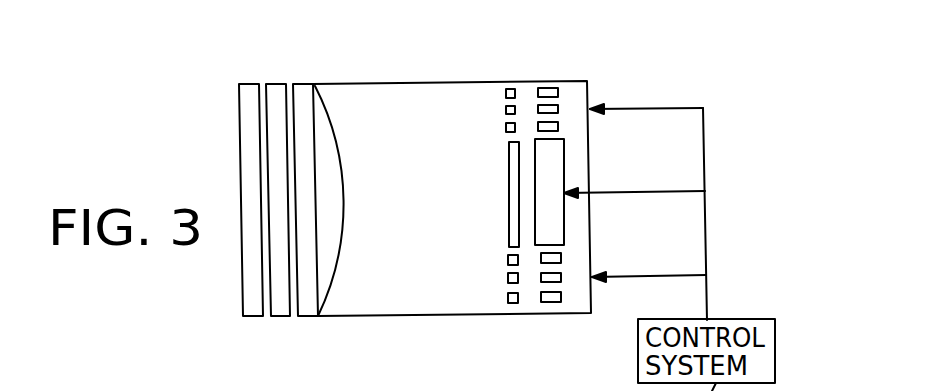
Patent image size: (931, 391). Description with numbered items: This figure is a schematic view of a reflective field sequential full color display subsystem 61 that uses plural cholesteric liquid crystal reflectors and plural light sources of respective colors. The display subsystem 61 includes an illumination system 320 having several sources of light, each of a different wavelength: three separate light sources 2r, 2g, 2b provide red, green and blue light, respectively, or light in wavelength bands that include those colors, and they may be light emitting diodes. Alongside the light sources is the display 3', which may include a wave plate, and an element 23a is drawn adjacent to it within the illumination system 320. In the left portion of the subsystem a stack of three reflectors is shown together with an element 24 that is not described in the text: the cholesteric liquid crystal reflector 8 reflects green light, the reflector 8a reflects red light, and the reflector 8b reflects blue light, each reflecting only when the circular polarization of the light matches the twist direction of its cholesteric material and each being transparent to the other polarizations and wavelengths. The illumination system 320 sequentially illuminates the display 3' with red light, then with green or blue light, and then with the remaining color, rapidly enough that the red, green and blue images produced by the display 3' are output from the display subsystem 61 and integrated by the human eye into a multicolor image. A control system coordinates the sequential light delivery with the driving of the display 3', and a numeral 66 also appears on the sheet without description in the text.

The full color display subsystem 61 is at (213, 38).
The cholesteric liquid crystal reflector 8b is at (238, 100).
The cholesteric liquid crystal reflector 8a is at (275, 84).
The cholesteric liquid crystal reflector 8 is at (302, 83).
The lens 24 is at (328, 117).
The illumination system 320 is at (544, 66).
The light source 2r is at (558, 92).
The light source 2g is at (558, 109).
The light source 2b is at (558, 126).
The display 3' is at (579, 192).
The light guide element 23a is at (509, 193).
The housing 66 is at (267, 383).